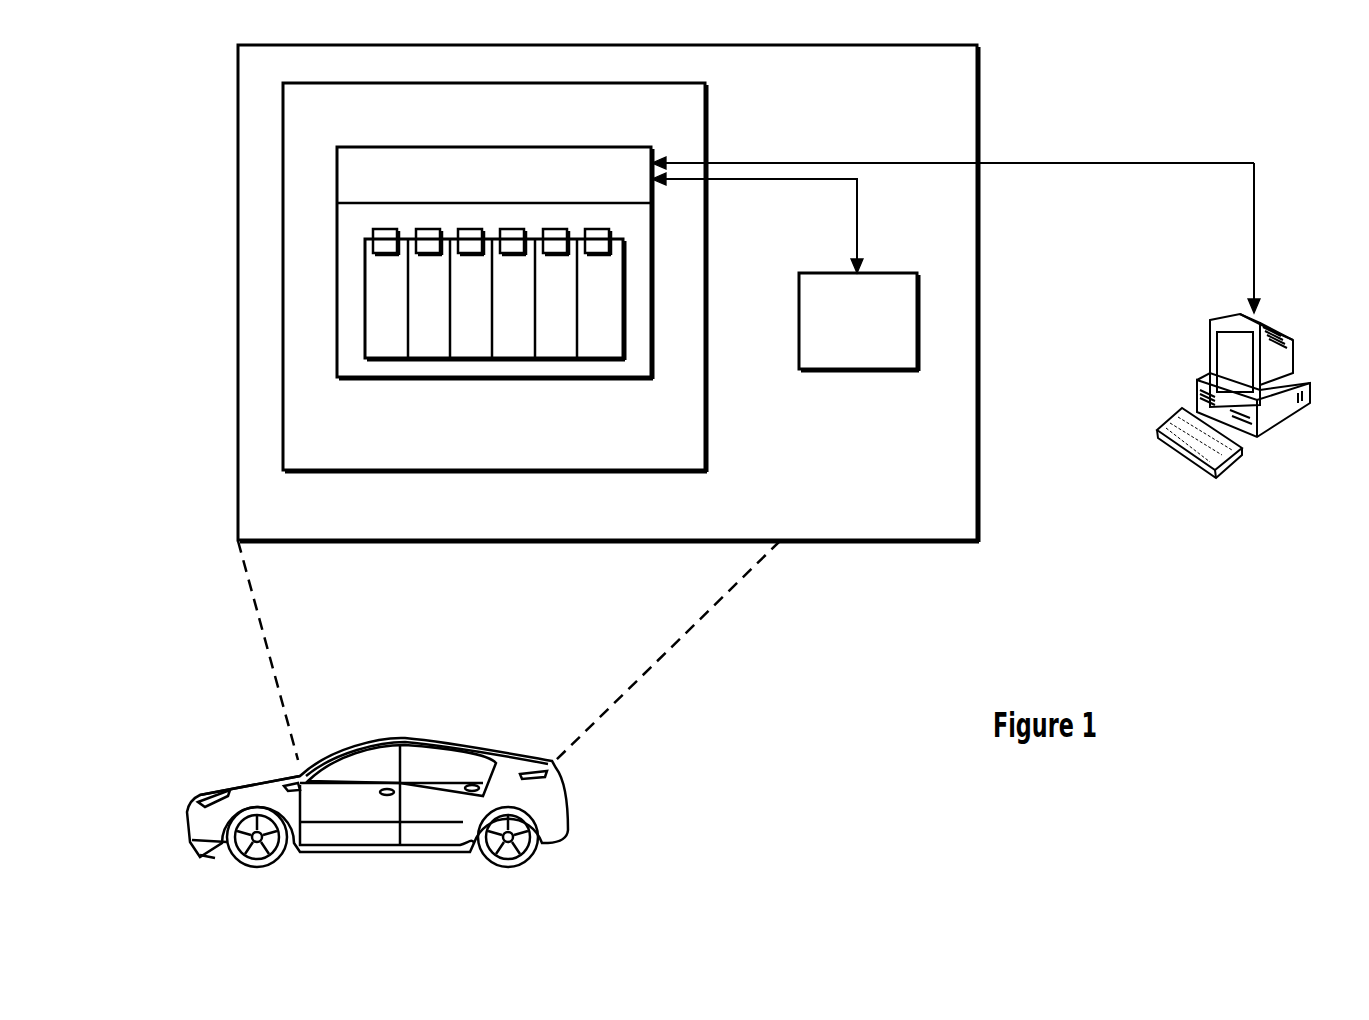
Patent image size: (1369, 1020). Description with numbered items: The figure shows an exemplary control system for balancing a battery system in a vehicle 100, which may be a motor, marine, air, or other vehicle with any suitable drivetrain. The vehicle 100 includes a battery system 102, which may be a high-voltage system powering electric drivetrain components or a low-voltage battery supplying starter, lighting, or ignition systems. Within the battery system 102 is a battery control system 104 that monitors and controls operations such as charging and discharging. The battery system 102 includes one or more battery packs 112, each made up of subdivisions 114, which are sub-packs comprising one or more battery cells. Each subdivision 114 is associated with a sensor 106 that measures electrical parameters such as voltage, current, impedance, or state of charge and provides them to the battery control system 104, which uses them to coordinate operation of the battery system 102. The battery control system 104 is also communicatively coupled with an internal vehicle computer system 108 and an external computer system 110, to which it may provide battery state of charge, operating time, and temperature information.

The vehicle 100 is at (272, 773).
The battery system 102 is at (324, 111).
The battery control system 104 is at (644, 173).
The sensors 106 is at (460, 230).
The internal vehicle computer system 108 is at (870, 331).
The external computer system 110 is at (1183, 455).
The battery pack 112 is at (644, 227).
The subdivisions 114 is at (467, 342).